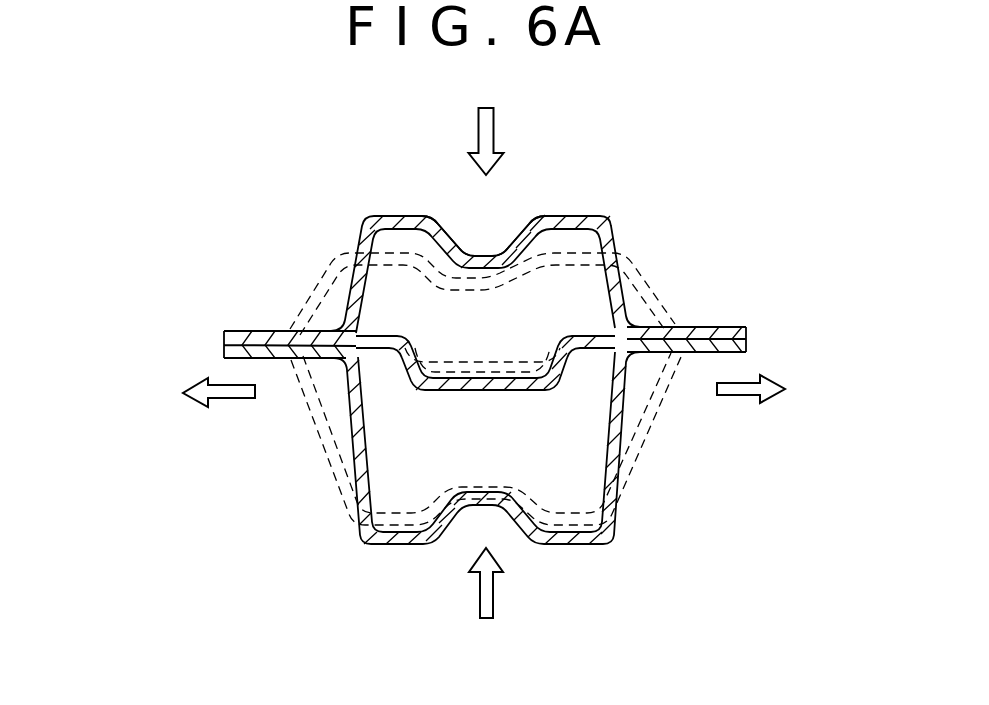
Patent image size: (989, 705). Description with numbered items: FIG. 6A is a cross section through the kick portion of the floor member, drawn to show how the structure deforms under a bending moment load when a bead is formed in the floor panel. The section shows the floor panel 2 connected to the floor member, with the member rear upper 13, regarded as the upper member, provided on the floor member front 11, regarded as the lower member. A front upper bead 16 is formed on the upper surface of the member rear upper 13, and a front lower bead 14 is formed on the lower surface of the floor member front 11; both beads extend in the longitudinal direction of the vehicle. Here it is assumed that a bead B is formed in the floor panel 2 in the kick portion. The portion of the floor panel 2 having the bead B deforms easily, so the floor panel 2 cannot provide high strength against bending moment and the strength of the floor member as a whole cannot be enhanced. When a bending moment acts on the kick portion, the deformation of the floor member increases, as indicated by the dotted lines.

The floor panel 2 is at (265, 332).
The floor member front 11 is at (260, 358).
The member rear upper 13 is at (400, 216).
The front lower bead 14 is at (478, 494).
The front upper bead 16 is at (502, 278).
The bead B is at (471, 391).